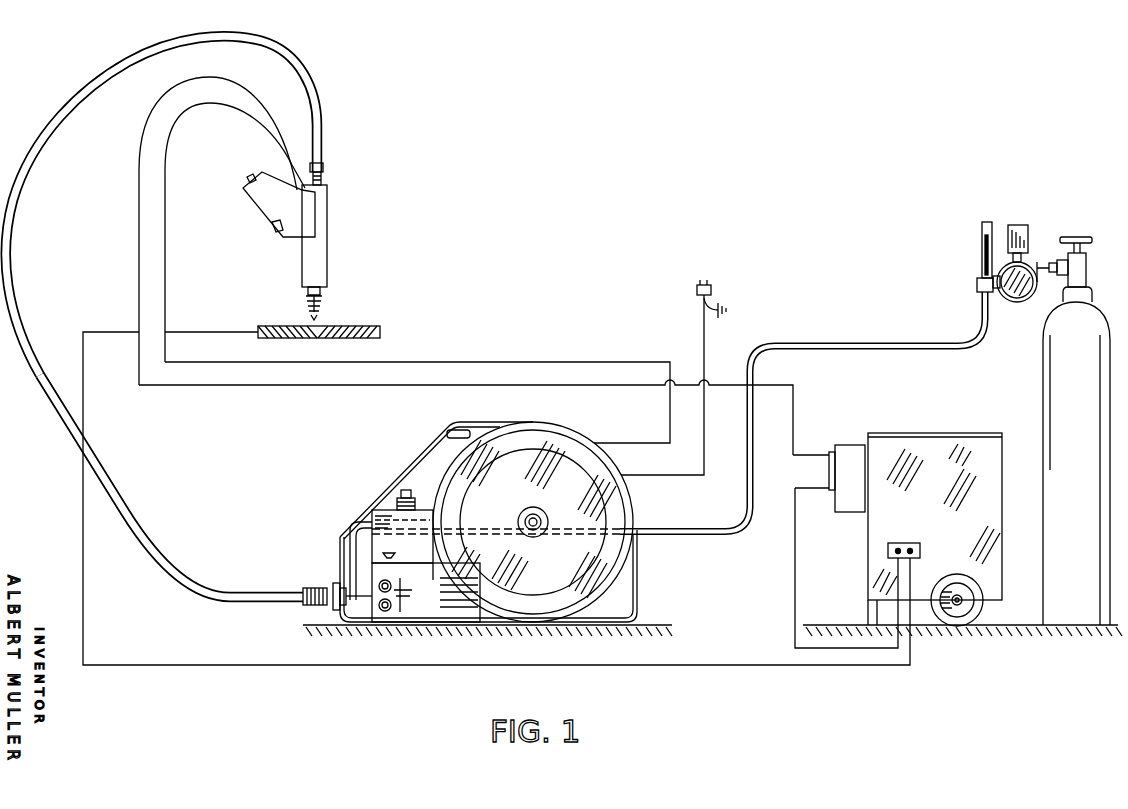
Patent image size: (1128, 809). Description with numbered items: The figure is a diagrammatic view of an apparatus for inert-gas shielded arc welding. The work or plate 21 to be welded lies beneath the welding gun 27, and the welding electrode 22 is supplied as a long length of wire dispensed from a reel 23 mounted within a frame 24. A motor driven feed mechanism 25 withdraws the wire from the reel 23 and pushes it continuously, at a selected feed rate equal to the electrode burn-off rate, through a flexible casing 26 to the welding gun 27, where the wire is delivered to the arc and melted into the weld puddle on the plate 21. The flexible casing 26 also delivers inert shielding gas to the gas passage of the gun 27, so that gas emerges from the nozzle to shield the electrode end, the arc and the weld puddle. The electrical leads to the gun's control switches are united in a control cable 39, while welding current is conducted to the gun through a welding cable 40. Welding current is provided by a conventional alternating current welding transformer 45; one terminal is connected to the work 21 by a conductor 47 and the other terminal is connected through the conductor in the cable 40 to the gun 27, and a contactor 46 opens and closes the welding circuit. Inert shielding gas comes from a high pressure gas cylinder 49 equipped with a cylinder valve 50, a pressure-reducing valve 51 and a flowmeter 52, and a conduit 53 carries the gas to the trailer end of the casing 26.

The work or plate 21 is at (373, 326).
The welding electrode 22 is at (320, 316).
The reel 23 is at (590, 547).
The frame 24 is at (637, 608).
The motor driven feed mechanism 25 is at (377, 517).
The flexible casing 26 is at (119, 505).
The welding gun 27 is at (328, 218).
The control cable 39 is at (168, 165).
The welding cable 40 is at (139, 135).
The alternating current welding transformer 45 is at (1002, 528).
The contactor 46 is at (852, 447).
The conductor 47 is at (688, 665).
The high pressure gas cylinder 49 is at (1045, 386).
The cylinder valve 50 is at (1089, 276).
The pressure-reducing valve 51 is at (1037, 300).
The flowmeter 52 is at (980, 235).
The conduit 53 is at (879, 349).